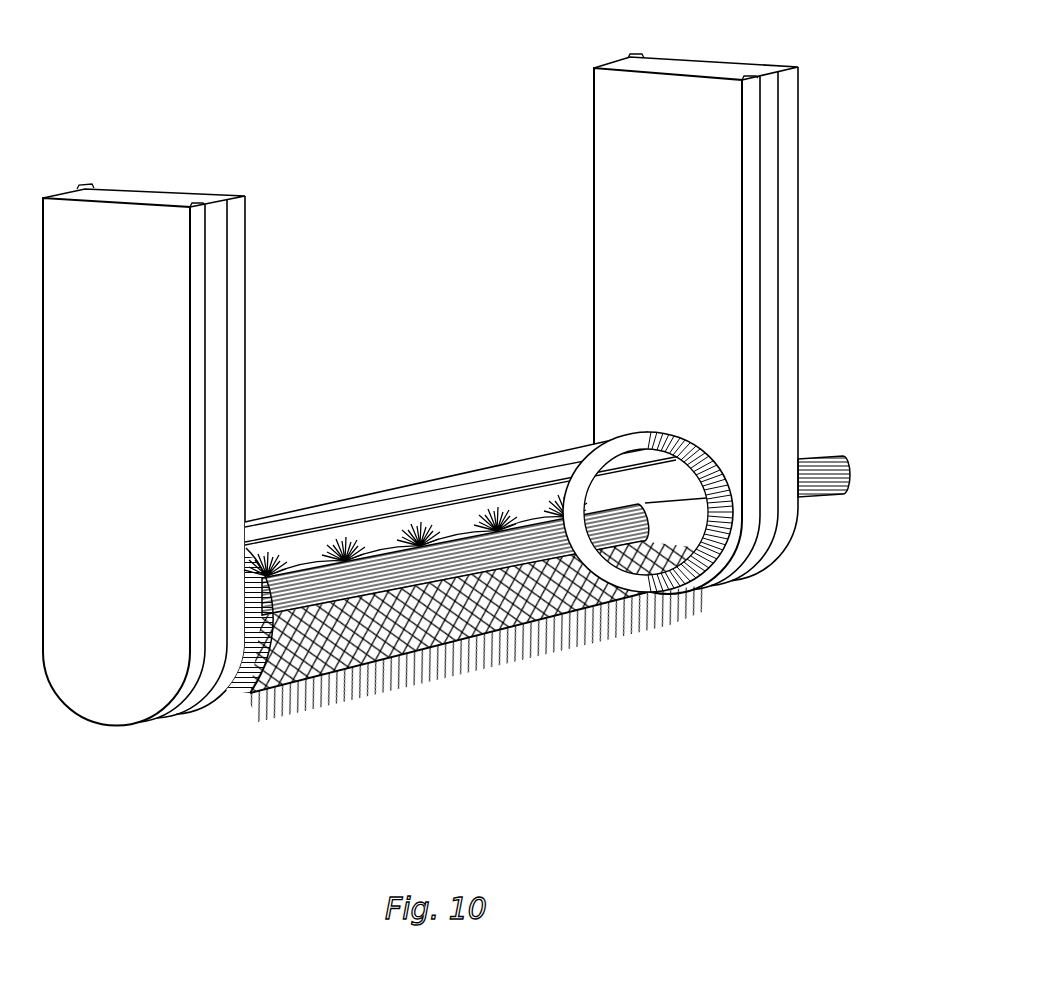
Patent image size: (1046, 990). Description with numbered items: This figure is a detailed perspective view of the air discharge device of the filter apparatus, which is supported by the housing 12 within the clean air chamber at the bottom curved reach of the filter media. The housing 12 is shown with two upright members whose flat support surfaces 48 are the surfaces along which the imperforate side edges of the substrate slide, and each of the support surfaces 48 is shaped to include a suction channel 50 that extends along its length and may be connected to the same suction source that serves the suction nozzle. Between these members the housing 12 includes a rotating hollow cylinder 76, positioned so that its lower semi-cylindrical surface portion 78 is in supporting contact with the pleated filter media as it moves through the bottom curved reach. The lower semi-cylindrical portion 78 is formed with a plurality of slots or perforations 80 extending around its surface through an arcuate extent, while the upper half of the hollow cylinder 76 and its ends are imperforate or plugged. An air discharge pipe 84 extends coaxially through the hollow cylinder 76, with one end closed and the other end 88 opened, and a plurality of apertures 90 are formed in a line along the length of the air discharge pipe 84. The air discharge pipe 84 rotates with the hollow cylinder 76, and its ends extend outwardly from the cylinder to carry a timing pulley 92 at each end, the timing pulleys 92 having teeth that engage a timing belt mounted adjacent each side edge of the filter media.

The housing 12 is at (458, 363).
The flat support surfaces 48 is at (235, 272).
The suction channel 50 is at (217, 332).
The rotating hollow cylinder 76 is at (527, 455).
The lower semi-cylindrical surface portion 78 is at (657, 607).
The slots or perforations 80 is at (703, 594).
The air discharge pipe 84 is at (460, 543).
The open end of the air discharge pipe 88 is at (846, 460).
The apertures 90 is at (350, 568).
The timing pulley 92 is at (266, 572).